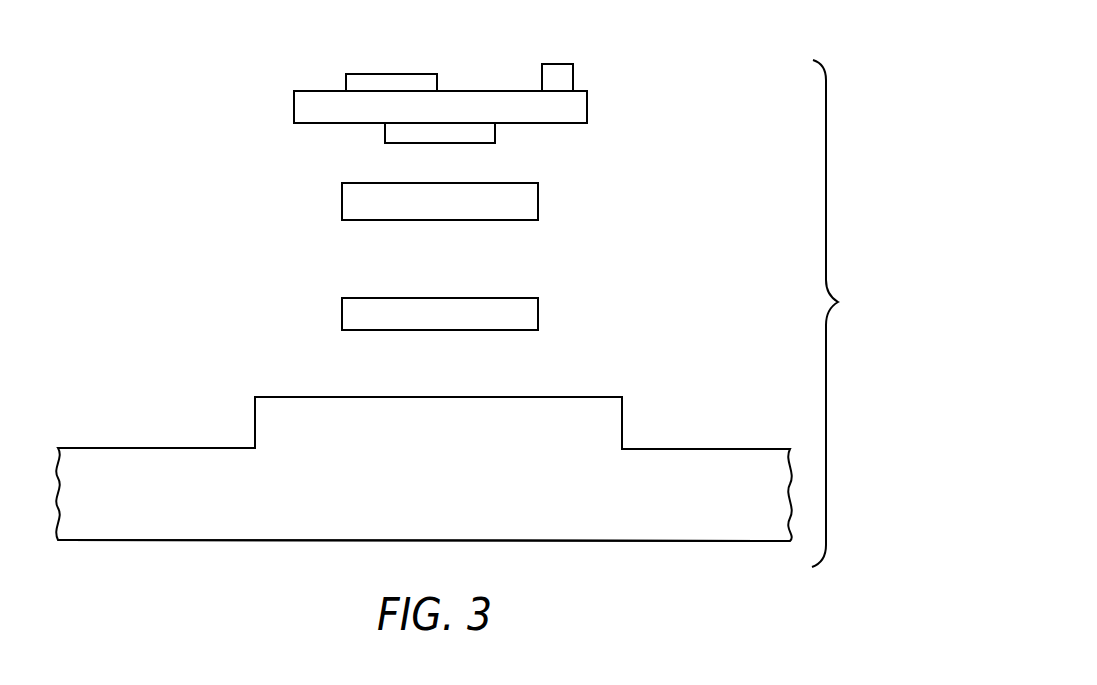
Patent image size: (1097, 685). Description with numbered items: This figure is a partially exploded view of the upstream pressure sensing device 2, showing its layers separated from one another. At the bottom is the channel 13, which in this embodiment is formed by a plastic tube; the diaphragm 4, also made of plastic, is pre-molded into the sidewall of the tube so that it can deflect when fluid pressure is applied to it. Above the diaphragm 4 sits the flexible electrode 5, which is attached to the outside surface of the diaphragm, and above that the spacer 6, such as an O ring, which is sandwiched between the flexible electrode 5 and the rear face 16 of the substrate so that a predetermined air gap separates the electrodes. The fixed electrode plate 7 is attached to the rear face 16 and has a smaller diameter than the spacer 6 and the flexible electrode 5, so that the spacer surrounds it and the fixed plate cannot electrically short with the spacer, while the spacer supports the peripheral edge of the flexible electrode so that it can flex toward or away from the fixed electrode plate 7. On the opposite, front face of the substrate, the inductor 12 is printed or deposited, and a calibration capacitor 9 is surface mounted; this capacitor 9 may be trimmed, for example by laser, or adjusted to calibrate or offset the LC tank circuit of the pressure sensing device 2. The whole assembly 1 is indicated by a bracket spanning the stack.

The laser diode arrangement 1 is at (714, 104).
The upstream pressure sensing device 2 is at (246, 228).
The diaphragm 4 is at (596, 397).
The flexible electrode 5 is at (539, 313).
The spacer 6 is at (539, 200).
The fixed electrode plate 7 is at (497, 131).
The calibration capacitor 9 is at (574, 71).
The inductor 12 is at (402, 73).
The channel 13 is at (613, 541).
The rear face of substrate 16 is at (331, 125).